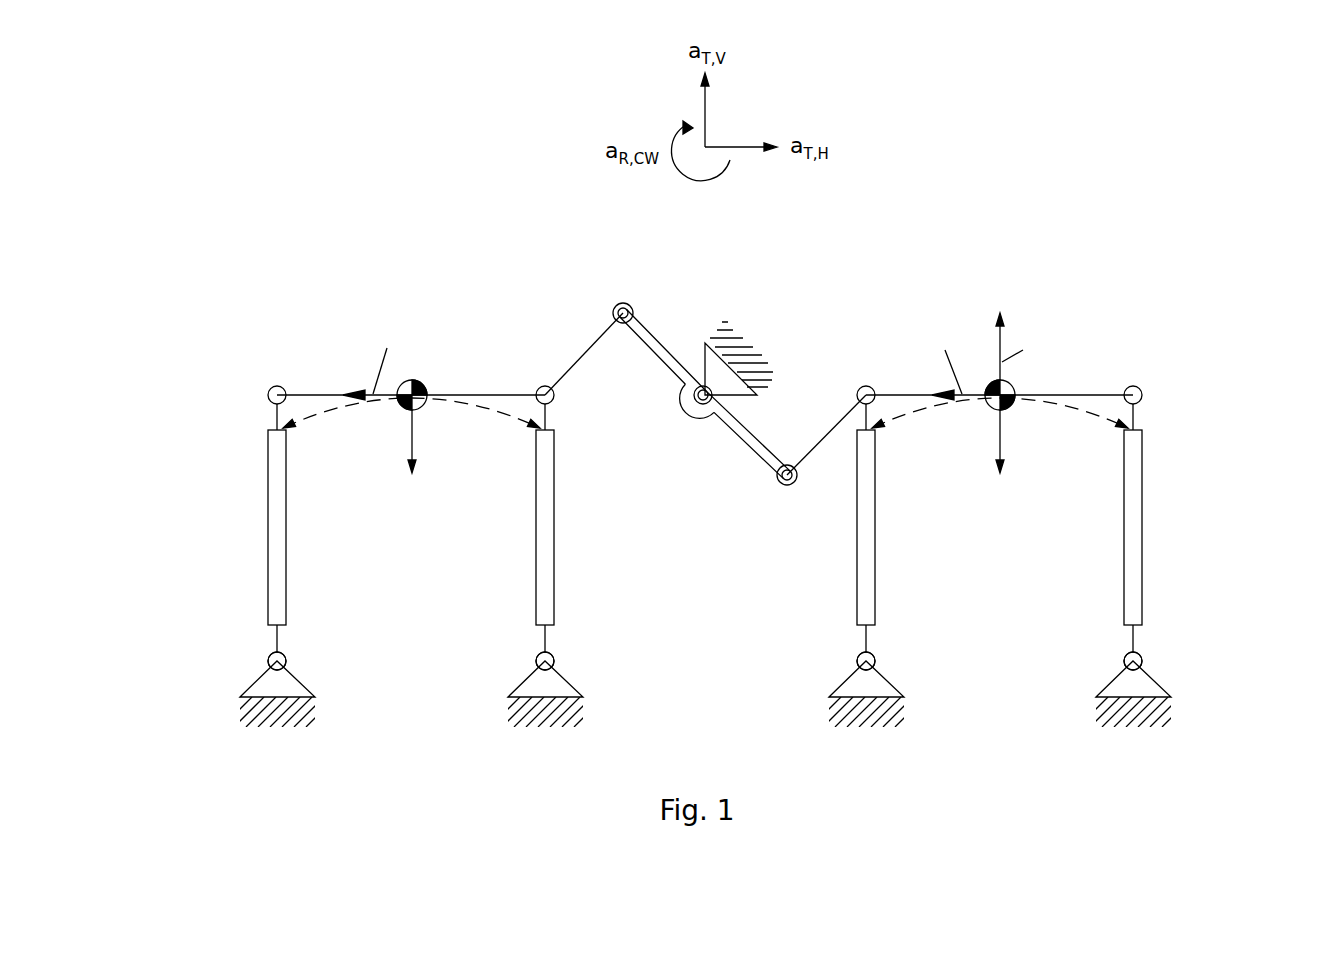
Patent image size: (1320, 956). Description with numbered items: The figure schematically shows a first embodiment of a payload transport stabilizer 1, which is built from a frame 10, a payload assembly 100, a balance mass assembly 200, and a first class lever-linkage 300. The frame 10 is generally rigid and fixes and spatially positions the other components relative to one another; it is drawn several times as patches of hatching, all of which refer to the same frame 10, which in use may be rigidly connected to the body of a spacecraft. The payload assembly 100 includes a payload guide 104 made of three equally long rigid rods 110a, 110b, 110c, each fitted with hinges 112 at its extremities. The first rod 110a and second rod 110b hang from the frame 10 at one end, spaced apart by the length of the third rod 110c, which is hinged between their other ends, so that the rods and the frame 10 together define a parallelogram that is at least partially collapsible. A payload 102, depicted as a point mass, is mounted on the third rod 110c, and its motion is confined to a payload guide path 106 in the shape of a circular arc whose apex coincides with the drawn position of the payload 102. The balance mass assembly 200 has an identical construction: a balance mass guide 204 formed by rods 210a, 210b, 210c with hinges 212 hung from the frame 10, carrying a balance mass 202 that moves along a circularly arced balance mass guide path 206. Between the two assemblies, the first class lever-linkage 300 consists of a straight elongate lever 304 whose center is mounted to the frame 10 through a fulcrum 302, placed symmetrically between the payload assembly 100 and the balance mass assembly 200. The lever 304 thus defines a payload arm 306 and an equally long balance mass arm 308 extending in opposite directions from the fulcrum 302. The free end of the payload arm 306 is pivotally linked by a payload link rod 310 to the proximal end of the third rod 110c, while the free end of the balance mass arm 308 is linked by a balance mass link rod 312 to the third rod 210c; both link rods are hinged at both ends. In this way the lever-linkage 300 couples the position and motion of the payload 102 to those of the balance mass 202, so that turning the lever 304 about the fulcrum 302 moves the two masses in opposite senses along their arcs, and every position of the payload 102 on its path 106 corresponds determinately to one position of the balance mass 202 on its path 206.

The payload transport stabilizer 1 is at (1132, 309).
The frame 10 is at (277, 710).
The payload assembly 100 is at (412, 258).
The payload 102 is at (420, 402).
The payload guide 104 is at (238, 528).
The payload guide path 106 is at (334, 410).
The first rod 110a is at (287, 600).
The second rod 110b is at (555, 600).
The third rod 110c is at (325, 390).
The hinges 112 is at (272, 386).
The balance mass assembly 200 is at (1000, 258).
The balance mass 202 is at (1008, 402).
The balance mass guide 204 is at (1173, 528).
The balance mass guide path 206 is at (922, 410).
The first rod of balance mass assembly 210a is at (875, 600).
The second rod of balance mass assembly 210b is at (1143, 600).
The third rod of balance mass assembly 210c is at (915, 390).
The hinges of balance mass assembly 212 is at (860, 386).
The first class lever-linkage 300 is at (705, 258).
The fulcrum 302 is at (698, 406).
The lever 304 is at (696, 396).
The payload arm 306 is at (663, 355).
The balance mass arm 308 is at (750, 438).
The payload link rod 310 is at (583, 355).
The balance mass link rod 312 is at (829, 432).